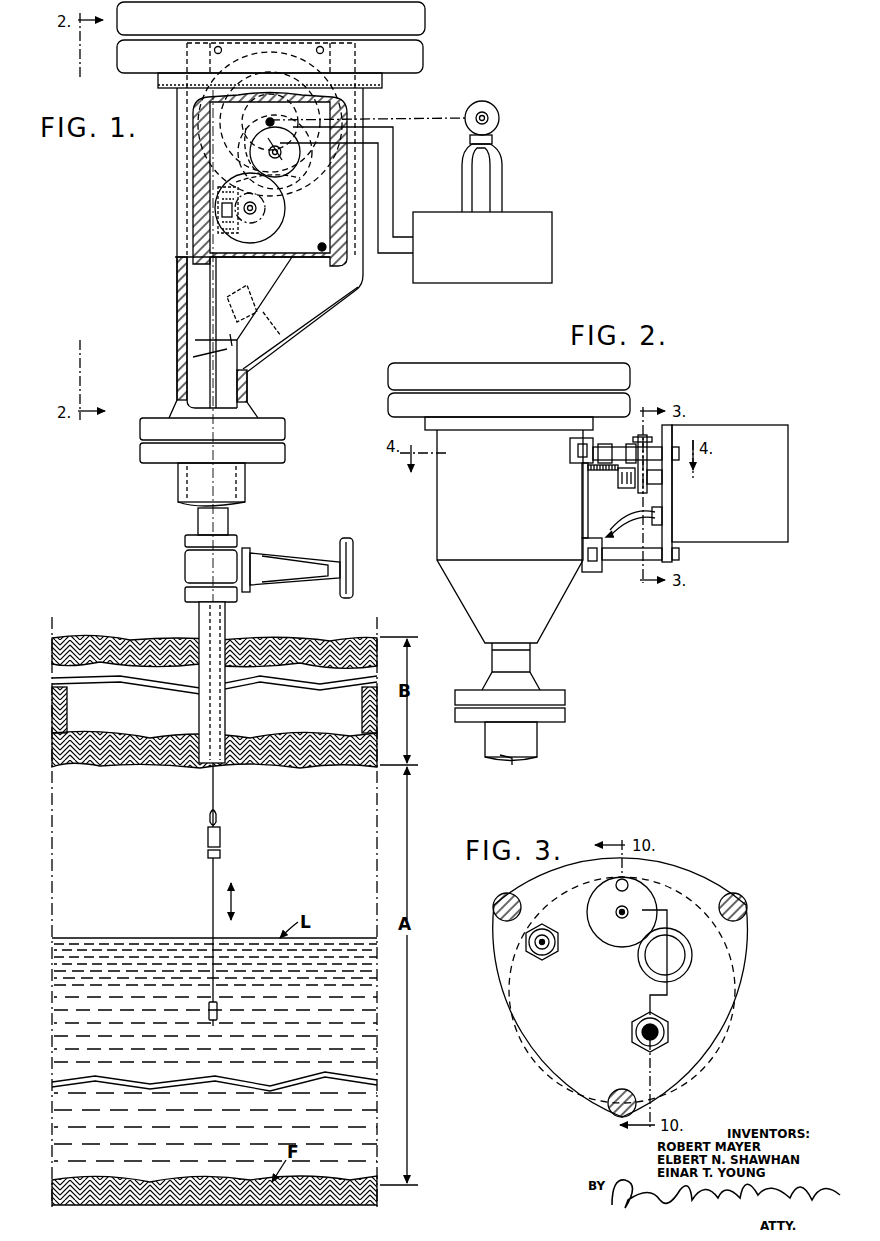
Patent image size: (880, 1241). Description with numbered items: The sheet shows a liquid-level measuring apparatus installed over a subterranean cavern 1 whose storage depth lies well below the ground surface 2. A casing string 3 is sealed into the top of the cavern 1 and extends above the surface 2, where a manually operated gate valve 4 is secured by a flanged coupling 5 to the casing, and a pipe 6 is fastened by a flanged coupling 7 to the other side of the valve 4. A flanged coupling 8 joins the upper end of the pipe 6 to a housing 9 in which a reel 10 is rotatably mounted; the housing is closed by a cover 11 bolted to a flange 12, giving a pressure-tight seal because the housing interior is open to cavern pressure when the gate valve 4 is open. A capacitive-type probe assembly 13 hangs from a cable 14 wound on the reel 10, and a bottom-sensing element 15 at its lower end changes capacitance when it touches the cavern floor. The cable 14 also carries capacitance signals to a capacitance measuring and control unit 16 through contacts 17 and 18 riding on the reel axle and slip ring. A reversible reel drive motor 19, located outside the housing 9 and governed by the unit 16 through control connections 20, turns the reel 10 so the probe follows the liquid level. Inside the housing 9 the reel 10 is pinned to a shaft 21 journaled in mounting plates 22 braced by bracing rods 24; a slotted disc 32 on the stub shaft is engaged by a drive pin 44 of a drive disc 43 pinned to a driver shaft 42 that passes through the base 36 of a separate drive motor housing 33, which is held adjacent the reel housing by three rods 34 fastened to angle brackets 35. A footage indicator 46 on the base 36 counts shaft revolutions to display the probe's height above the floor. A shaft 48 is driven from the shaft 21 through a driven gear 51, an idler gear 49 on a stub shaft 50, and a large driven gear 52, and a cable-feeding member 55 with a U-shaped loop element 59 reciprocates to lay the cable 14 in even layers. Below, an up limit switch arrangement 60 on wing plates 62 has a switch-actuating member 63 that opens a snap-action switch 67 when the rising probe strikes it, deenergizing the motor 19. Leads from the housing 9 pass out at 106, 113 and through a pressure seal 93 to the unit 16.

In FIG. 1, the subterranean cavern 1 is at (322, 760).
In FIG. 1, the ground surface 2 is at (104, 642).
In FIG. 1, the casing string 3 is at (226, 706).
In FIG. 1, the gate valve 4 is at (190, 562).
In FIG. 1, the flanged coupling 5 is at (185, 597).
In FIG. 1, the pipe 6 is at (228, 515).
In FIG. 2, the pipe 6 is at (530, 742).
In FIG. 1, the flanged coupling 7 is at (185, 540).
In FIG. 1, the flanged coupling 8 is at (285, 440).
In FIG. 2, the flanged coupling 8 is at (565, 705).
In FIG. 1, the housing 9 is at (315, 305).
In FIG. 2, the housing 9 is at (450, 513).
In FIG. 1, the reel 10 is at (265, 70).
In FIG. 1, the cover 11 is at (425, 22).
In FIG. 2, the cover 11 is at (480, 372).
In FIG. 1, the flange 12 is at (423, 56).
In FIG. 2, the flange 12 is at (470, 408).
In FIG. 1, the capacitive-type probe assembly 13 is at (210, 890).
In FIG. 1, the cable 14 is at (208, 388).
In FIG. 2, the cable 14 is at (512, 765).
In FIG. 1, the bottom-sensing element 15 is at (214, 1022).
In FIG. 1, the capacitance measuring and control unit 16 is at (552, 241).
In FIG. 1, the contact 17 is at (275, 152).
In FIG. 1, the contact 18 is at (296, 118).
In FIG. 1, the reel drive motor 19 is at (499, 115).
In FIG. 1, the control connections 20 is at (466, 183).
In FIG. 1, the shaft 21 is at (265, 120).
In FIG. 1, the mounting plates 22 is at (285, 247).
In FIG. 1, the bracing rods 24 is at (222, 35).
In FIG. 2, the disc 32 is at (642, 435).
In FIG. 2, the drive motor housing 33 is at (740, 430).
In FIG. 3, the drive motor housing 33 is at (700, 887).
In FIG. 2, the rods 34 is at (600, 456).
In FIG. 3, the rods 34 is at (494, 912).
In FIG. 2, the angle bracket 35 is at (570, 452).
In FIG. 2, the base 36 is at (672, 500).
In FIG. 3, the base 36 is at (720, 985).
In FIG. 3, the driver shaft 42 is at (616, 912).
In FIG. 2, the drive disc 43 is at (646, 437).
In FIG. 3, the drive disc 43 is at (612, 937).
In FIG. 3, the drive pin 44 is at (616, 885).
In FIG. 2, the footage indicator 46 is at (618, 486).
In FIG. 3, the footage indicator 46 is at (685, 950).
In FIG. 1, the shaft 48 is at (254, 214).
In FIG. 1, the idler gear 49 is at (300, 178).
In FIG. 1, the stub shaft 50 is at (305, 158).
In FIG. 1, the driven gear 51 is at (255, 134).
In FIG. 1, the large driven gear 52 is at (285, 208).
In FIG. 1, the cable-feeding member 55 is at (212, 190).
In FIG. 1, the U-shaped loop element 59 is at (220, 207).
In FIG. 1, the up limit switch arrangement 60 is at (195, 345).
In FIG. 1, the wing plates 62 is at (232, 272).
In FIG. 1, the switch-actuating member 63 is at (200, 356).
In FIG. 1, the snap-action momentary-contact switch 67 is at (281, 336).
In FIG. 2, the pressure seal 93 is at (658, 508).
In FIG. 3, the pressure seal 93 is at (668, 1028).
In FIG. 2, the leads 106 is at (567, 480).
In FIG. 3, the leads 106 is at (558, 960).
In FIG. 2, the leads 113 is at (590, 470).
In FIG. 3, the leads 113 is at (540, 960).